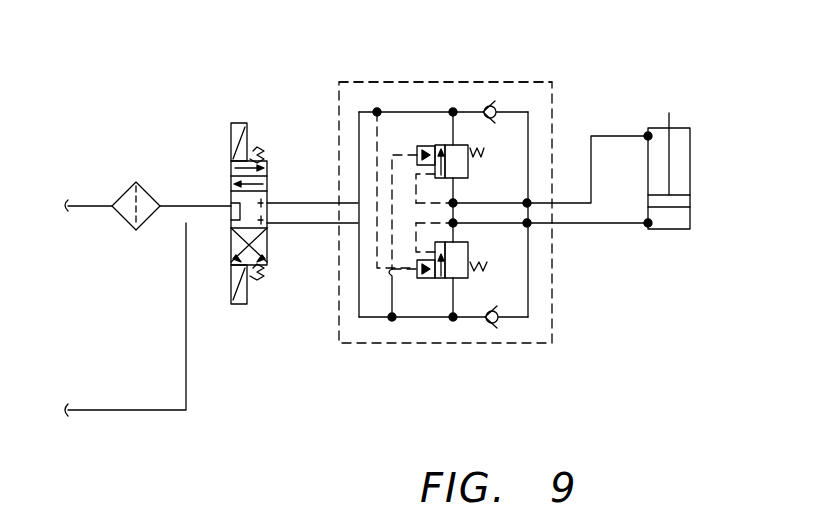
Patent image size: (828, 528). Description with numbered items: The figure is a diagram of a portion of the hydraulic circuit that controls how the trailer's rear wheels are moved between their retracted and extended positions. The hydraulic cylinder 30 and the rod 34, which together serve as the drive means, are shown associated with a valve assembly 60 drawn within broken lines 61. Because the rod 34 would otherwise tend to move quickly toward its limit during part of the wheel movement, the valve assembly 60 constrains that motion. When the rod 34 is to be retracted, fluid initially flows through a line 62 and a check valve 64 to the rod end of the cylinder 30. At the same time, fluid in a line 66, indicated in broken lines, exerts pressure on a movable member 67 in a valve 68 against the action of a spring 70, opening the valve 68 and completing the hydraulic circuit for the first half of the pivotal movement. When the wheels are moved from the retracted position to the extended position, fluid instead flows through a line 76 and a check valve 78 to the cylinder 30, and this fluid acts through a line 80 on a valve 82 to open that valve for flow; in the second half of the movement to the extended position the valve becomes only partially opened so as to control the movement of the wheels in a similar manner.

The hydraulic cylinder 30 is at (687, 207).
The rod 34 is at (669, 159).
The valve assembly 60 is at (455, 345).
The broken lines 61 is at (490, 80).
The line 62 is at (402, 111).
The check valve 64 is at (498, 108).
The line 66 is at (377, 226).
The movable member 67 is at (445, 255).
The valve 68 is at (463, 232).
The spring 70 is at (487, 272).
The line 76 is at (420, 317).
The check valve 78 is at (493, 322).
The line 80 is at (392, 286).
The valve 82 is at (470, 168).